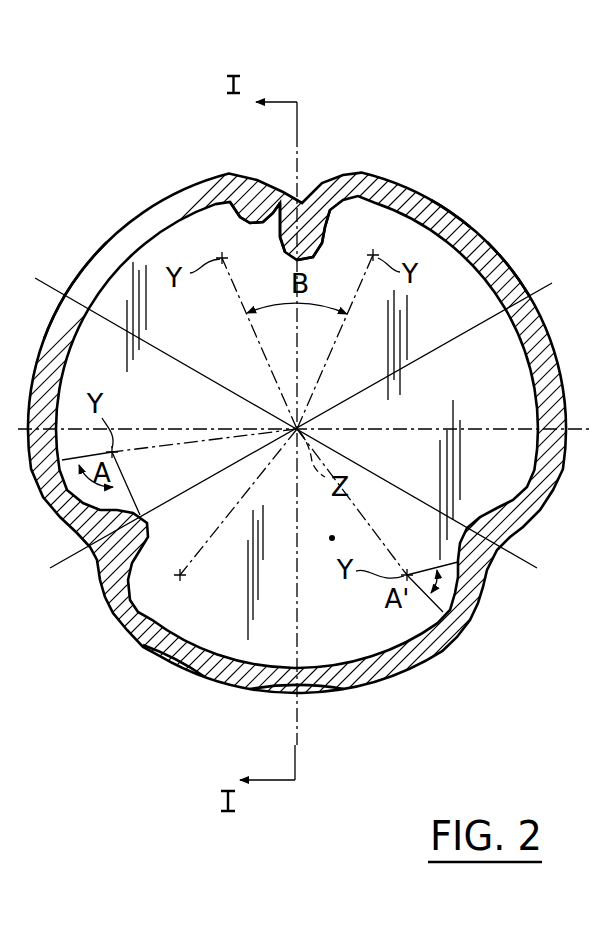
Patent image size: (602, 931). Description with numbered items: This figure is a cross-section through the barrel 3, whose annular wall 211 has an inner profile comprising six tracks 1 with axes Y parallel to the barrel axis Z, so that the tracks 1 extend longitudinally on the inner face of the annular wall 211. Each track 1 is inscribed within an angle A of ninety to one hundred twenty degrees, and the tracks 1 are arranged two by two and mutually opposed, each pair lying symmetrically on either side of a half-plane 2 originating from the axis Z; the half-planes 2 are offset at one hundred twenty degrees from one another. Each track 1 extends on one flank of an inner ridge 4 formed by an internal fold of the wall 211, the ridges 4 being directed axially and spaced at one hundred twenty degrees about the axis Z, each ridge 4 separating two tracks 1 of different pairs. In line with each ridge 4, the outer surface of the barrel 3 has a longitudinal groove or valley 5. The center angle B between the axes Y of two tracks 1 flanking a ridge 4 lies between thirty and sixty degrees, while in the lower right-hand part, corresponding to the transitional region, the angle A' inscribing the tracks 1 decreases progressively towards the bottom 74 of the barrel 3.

The tracks 1 is at (208, 182).
The half-plane 2 is at (92, 264).
The barrel 3 is at (435, 190).
The inner ridge 4 is at (321, 212).
The longitudinal groove or valley 5 is at (286, 194).
The annular wall 211 is at (153, 662).
The bottom 74 is at (349, 530).